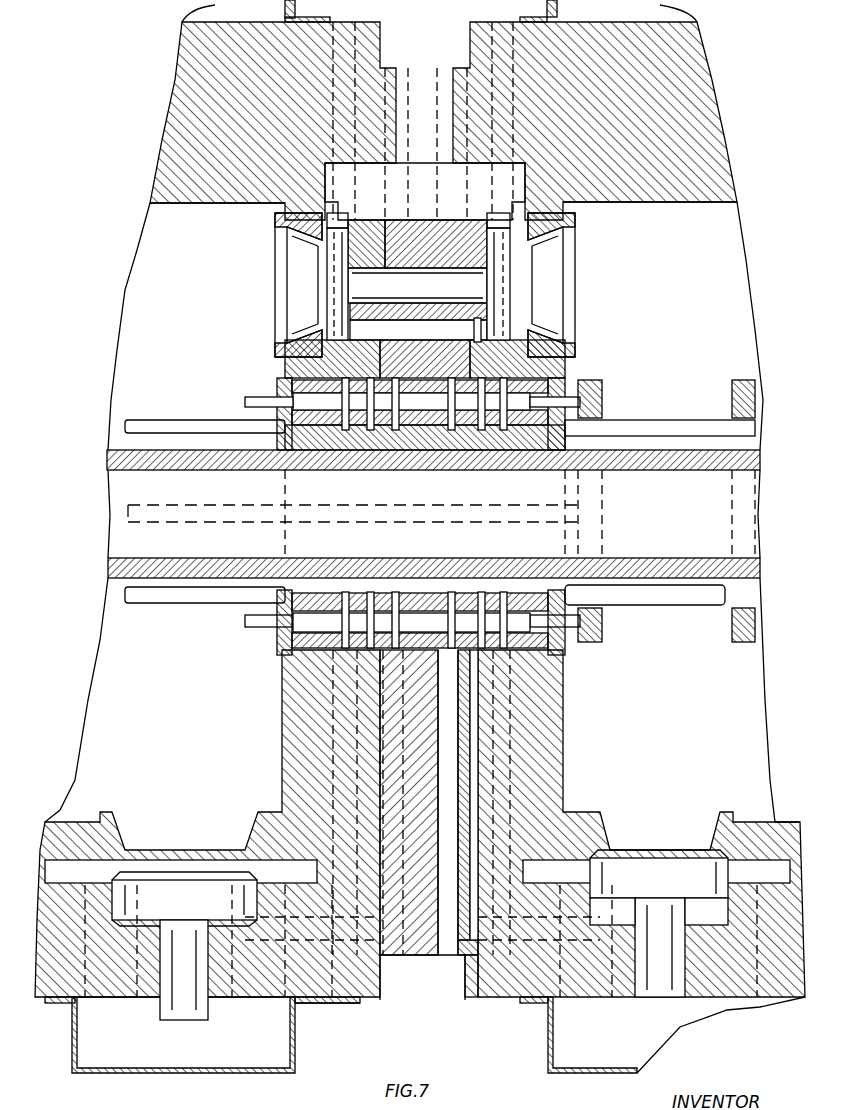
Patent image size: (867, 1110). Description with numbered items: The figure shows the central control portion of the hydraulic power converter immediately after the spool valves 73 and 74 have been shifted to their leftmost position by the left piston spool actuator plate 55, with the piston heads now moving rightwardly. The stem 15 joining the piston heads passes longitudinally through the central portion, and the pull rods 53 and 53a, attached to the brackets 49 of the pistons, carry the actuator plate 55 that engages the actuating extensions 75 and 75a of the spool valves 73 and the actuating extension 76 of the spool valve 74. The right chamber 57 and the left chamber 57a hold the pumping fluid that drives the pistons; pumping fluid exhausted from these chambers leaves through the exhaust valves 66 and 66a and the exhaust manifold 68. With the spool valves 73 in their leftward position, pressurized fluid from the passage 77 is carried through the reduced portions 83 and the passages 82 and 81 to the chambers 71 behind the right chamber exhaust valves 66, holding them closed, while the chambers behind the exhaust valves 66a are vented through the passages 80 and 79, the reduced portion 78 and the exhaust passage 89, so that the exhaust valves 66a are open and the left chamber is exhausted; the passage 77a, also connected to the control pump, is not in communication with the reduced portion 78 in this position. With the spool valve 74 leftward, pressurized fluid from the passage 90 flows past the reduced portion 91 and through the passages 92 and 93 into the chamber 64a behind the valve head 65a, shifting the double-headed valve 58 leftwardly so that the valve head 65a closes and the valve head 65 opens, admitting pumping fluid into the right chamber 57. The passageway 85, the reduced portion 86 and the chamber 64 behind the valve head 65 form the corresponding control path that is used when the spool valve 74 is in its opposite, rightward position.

The exhaust manifold 68 is at (205, 22).
The passageway 85 is at (405, 85).
The passage 90 is at (463, 108).
The double-headed valve 58 is at (420, 275).
The passage 93 is at (425, 340).
The passage 92 is at (482, 360).
The chamber 64 is at (520, 222).
The chamber 64a is at (345, 318).
The valve head 65 is at (525, 287).
The valve head 65a is at (300, 258).
The right chamber 57 is at (650, 263).
The left chamber 57a is at (217, 255).
The stem 15 is at (185, 450).
The pull rod 53 is at (135, 422).
The pull rod 53a is at (205, 525).
The spool valve 74 is at (410, 412).
The reduced portion 86 is at (355, 432).
The reduced portion 91 is at (468, 432).
The actuating extension 75a is at (265, 627).
The actuating extension 76 is at (565, 388).
The left piston spool actuator plate 55 is at (600, 382).
The bracket 49 is at (735, 380).
The actuating extension 75 is at (582, 622).
The spool valve 73 is at (312, 612).
The reduced portion 78 is at (362, 612).
The reduced portion 83 is at (445, 612).
The passage 77 is at (445, 720).
The passage 77a is at (412, 805).
The passage 82 is at (478, 708).
The exhaust valve 66 is at (656, 923).
The exhaust valve 66a is at (181, 940).
The chamber 71 is at (659, 911).
The passage 80 is at (308, 942).
The passage 81 is at (520, 945).
The passage 79 is at (392, 960).
The exhaust passage 89 is at (335, 1000).